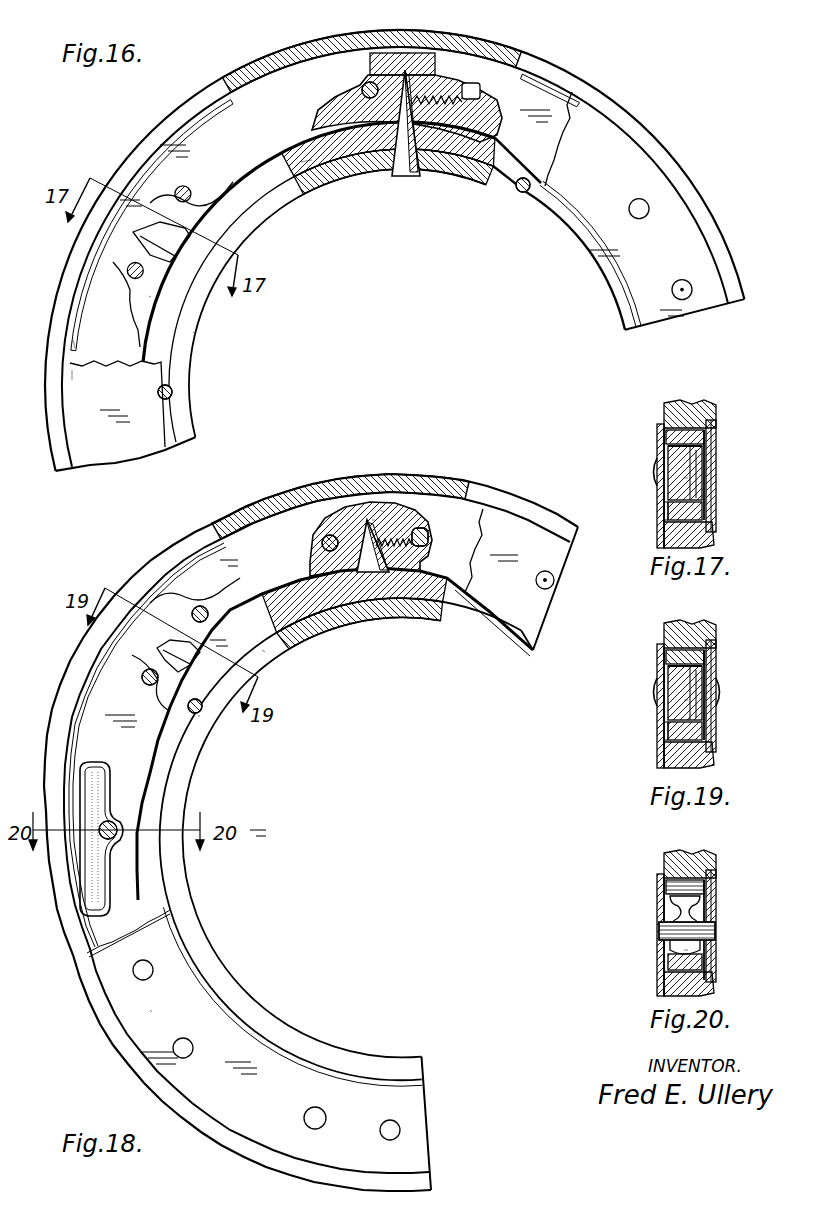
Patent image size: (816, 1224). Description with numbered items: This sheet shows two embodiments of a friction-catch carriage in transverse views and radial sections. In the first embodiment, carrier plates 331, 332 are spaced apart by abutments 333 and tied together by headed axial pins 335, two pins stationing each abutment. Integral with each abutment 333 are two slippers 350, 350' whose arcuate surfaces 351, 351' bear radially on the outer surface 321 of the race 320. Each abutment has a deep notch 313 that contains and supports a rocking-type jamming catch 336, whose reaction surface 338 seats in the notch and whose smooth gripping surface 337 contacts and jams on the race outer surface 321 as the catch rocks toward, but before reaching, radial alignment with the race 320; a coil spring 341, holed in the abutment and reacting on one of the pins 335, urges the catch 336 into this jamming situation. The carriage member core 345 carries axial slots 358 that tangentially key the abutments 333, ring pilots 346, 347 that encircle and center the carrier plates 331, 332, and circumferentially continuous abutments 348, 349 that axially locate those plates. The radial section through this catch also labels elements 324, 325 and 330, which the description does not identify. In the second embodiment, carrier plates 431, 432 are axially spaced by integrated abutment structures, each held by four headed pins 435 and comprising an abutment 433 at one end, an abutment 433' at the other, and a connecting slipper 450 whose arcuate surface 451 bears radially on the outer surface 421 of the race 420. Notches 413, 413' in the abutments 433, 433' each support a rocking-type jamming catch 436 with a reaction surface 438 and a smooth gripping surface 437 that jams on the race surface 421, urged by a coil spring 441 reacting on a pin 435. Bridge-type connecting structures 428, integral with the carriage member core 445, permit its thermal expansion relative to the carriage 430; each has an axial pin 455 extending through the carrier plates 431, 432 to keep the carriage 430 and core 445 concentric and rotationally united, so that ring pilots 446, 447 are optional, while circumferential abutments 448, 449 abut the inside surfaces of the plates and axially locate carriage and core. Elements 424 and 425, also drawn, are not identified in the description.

In FIG. 16, the deep notch 313 is at (361, 88).
In FIG. 16, the race 320 is at (312, 146).
In FIG. 17, the race 320 is at (664, 516).
In FIG. 16, the outer surface of race 321 is at (306, 160).
In FIG. 17, the outer surface of race 321 is at (704, 510).
In FIG. 16, the rivet pin 324 is at (175, 392).
In FIG. 16, the brake lining 325 is at (305, 185).
In FIG. 17, the brake lining 325 is at (700, 530).
In FIG. 17, the brake shoe assembly 330 is at (685, 480).
In FIG. 16, the carrier plate 331 is at (94, 330).
In FIG. 17, the carrier plate 331 is at (716, 437).
In FIG. 16, the carrier plate 332 is at (88, 390).
In FIG. 17, the carrier plate 332 is at (666, 434).
In FIG. 16, the abutment 333 is at (372, 110).
In FIG. 17, the abutment 333 is at (668, 455).
In FIG. 16, the headed axial pin 335 is at (172, 187).
In FIG. 17, the headed axial pin 335 is at (660, 474).
In FIG. 16, the rocking-type jamming catch 336 is at (399, 150).
In FIG. 17, the rocking-type jamming catch 336 is at (702, 470).
In FIG. 16, the smooth gripping surface 337 is at (413, 160).
In FIG. 17, the smooth gripping surface 337 is at (704, 486).
In FIG. 16, the reaction surface 338 is at (396, 50).
In FIG. 17, the reaction surface 338 is at (704, 450).
In FIG. 16, the coil spring 341 is at (442, 160).
In FIG. 16, the carriage member core 345 is at (262, 68).
In FIG. 17, the carriage member core 345 is at (686, 400).
In FIG. 17, the ring pilot 346 is at (718, 404).
In FIG. 16, the ring pilot 347 is at (68, 375).
In FIG. 17, the ring pilot 347 is at (660, 408).
In FIG. 17, the circumferentially continuous abutment 348 is at (716, 422).
In FIG. 16, the circumferentially continuous abutment 349 is at (71, 346).
In FIG. 17, the circumferentially continuous abutment 349 is at (660, 424).
In FIG. 16, the slipper 350 is at (342, 242).
In FIG. 16, the slipper 350' is at (202, 309).
In FIG. 16, the arcuate surface 351 is at (405, 295).
In FIG. 16, the arcuate surface 351' is at (222, 332).
In FIG. 16, the axial slot 358 is at (412, 52).
In FIG. 18, the notch 413 is at (122, 656).
In FIG. 18, the notch 413' is at (416, 491).
In FIG. 18, the race 420 is at (258, 628).
In FIG. 19, the race 420 is at (664, 746).
In FIG. 20, the race 420 is at (664, 968).
In FIG. 18, the outer surface of race 421 is at (262, 650).
In FIG. 19, the outer surface of race 421 is at (704, 732).
In FIG. 18, the rivet pin 424 is at (200, 716).
In FIG. 18, the brake lining 425 is at (316, 635).
In FIG. 19, the brake lining 425 is at (700, 756).
In FIG. 20, the brake lining 425 is at (700, 984).
In FIG. 18, the bridge-type connecting structure 428 is at (105, 800).
In FIG. 20, the bridge-type connecting structure 428 is at (702, 908).
In FIG. 19, the carriage 430 is at (685, 712).
In FIG. 20, the carriage 430 is at (670, 944).
In FIG. 18, the carrier plate 431 is at (134, 898).
In FIG. 19, the carrier plate 431 is at (716, 660).
In FIG. 20, the carrier plate 431 is at (716, 890).
In FIG. 18, the carrier plate 432 is at (150, 1010).
In FIG. 19, the carrier plate 432 is at (666, 658).
In FIG. 20, the carrier plate 432 is at (666, 887).
In FIG. 18, the abutment 433 is at (240, 576).
In FIG. 19, the abutment 433 is at (656, 693).
In FIG. 18, the abutment 433' is at (376, 485).
In FIG. 18, the headed pin 435 is at (324, 534).
In FIG. 19, the headed pin 435 is at (660, 700).
In FIG. 18, the rocking-type jamming catch 436 is at (376, 600).
In FIG. 19, the rocking-type jamming catch 436 is at (702, 696).
In FIG. 18, the smooth gripping surface 437 is at (388, 600).
In FIG. 19, the smooth gripping surface 437 is at (704, 714).
In FIG. 18, the reaction surface 438 is at (368, 512).
In FIG. 19, the reaction surface 438 is at (704, 676).
In FIG. 18, the coil spring 441 is at (405, 606).
In FIG. 18, the carriage member core 445 is at (258, 514).
In FIG. 19, the carriage member core 445 is at (693, 625).
In FIG. 20, the carriage member core 445 is at (693, 855).
In FIG. 19, the ring pilot 446 is at (718, 630).
In FIG. 20, the ring pilot 446 is at (718, 860).
In FIG. 18, the ring pilot 447 is at (90, 973).
In FIG. 19, the ring pilot 447 is at (660, 630).
In FIG. 20, the ring pilot 447 is at (660, 858).
In FIG. 19, the circumferential abutment 448 is at (716, 648).
In FIG. 20, the circumferential abutment 448 is at (716, 876).
In FIG. 18, the circumferential abutment 449 is at (76, 918).
In FIG. 19, the circumferential abutment 449 is at (660, 648).
In FIG. 20, the circumferential abutment 449 is at (660, 876).
In FIG. 18, the connecting slipper 450 is at (288, 577).
In FIG. 18, the arcuate surface 451 is at (262, 596).
In FIG. 18, the axial pin 455 is at (98, 826).
In FIG. 20, the axial pin 455 is at (672, 932).